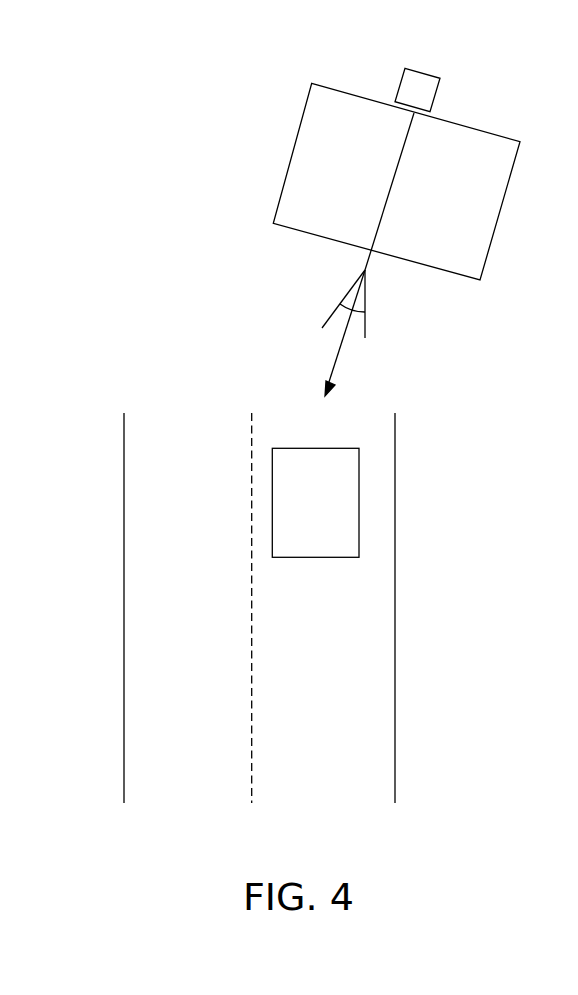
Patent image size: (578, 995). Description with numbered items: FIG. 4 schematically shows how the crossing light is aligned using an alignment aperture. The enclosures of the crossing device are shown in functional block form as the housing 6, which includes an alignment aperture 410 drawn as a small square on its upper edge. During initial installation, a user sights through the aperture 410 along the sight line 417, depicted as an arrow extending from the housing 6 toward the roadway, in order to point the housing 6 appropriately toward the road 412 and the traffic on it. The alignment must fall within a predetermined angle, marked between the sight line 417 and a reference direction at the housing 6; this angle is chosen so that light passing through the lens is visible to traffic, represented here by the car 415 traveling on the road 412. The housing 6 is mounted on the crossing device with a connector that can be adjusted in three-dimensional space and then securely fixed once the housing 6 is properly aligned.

The housing 6 is at (480, 232).
The alignment aperture 410 is at (400, 83).
The sight line 417 is at (333, 357).
The road 412 is at (163, 520).
The car 415 is at (333, 507).